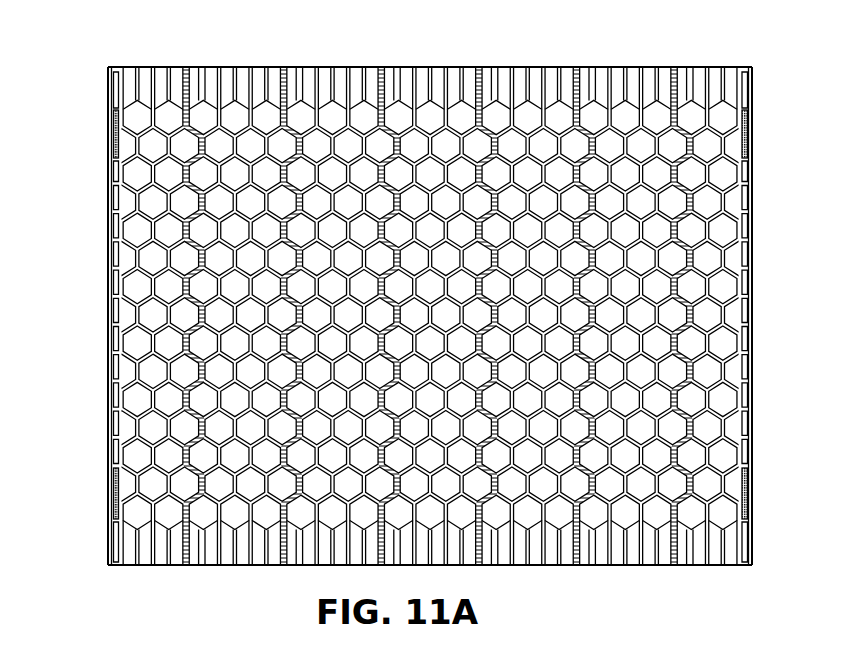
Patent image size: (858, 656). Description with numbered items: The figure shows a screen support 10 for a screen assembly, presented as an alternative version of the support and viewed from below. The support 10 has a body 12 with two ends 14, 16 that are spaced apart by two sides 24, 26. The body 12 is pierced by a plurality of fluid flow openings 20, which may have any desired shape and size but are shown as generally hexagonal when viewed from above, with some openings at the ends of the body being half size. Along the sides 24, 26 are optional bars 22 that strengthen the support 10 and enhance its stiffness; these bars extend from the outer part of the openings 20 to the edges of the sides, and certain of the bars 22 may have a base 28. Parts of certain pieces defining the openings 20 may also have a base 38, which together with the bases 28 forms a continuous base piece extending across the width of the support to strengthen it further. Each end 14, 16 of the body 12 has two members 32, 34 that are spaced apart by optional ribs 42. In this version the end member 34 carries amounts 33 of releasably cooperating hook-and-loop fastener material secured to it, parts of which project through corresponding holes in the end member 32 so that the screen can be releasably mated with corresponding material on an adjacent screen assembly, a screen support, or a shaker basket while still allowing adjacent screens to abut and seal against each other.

The screen support 10 is at (192, 60).
The body 12 is at (305, 67).
The end 14 is at (108, 95).
The end 16 is at (752, 95).
The fluid flow openings 20 is at (160, 342).
The bars 22 is at (222, 548).
The side 24 is at (632, 67).
The side 26 is at (637, 565).
The base 28 is at (572, 540).
The member 32 is at (108, 262).
The amounts of releasably cooperating hook-and-loop fastener material 33 is at (112, 132).
The end member 34 is at (113, 308).
The base 38 is at (190, 455).
The ribs 42 is at (116, 172).